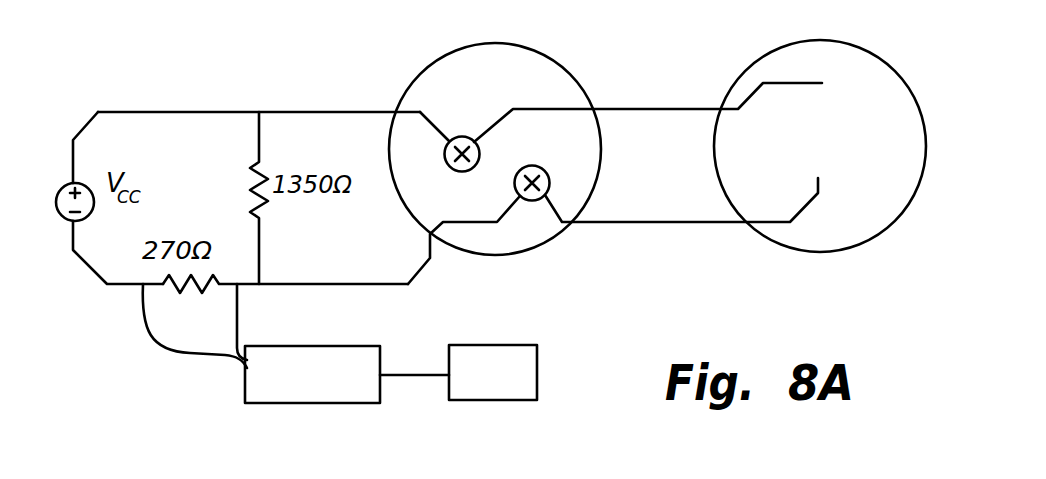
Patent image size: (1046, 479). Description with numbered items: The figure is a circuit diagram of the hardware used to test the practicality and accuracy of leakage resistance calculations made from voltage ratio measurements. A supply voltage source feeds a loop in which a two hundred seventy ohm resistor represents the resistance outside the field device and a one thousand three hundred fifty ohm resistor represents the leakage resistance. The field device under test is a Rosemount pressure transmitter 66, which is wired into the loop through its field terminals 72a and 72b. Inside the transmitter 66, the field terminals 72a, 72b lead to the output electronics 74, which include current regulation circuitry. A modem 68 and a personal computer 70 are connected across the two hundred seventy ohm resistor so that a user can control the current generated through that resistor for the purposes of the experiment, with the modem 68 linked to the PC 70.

The pressure transmitter 66 is at (447, 73).
The modem 68 is at (305, 357).
The personal computer 70 is at (475, 352).
The field terminal 72a is at (445, 155).
The field terminal 72b is at (549, 183).
The output electronics 74 is at (865, 80).